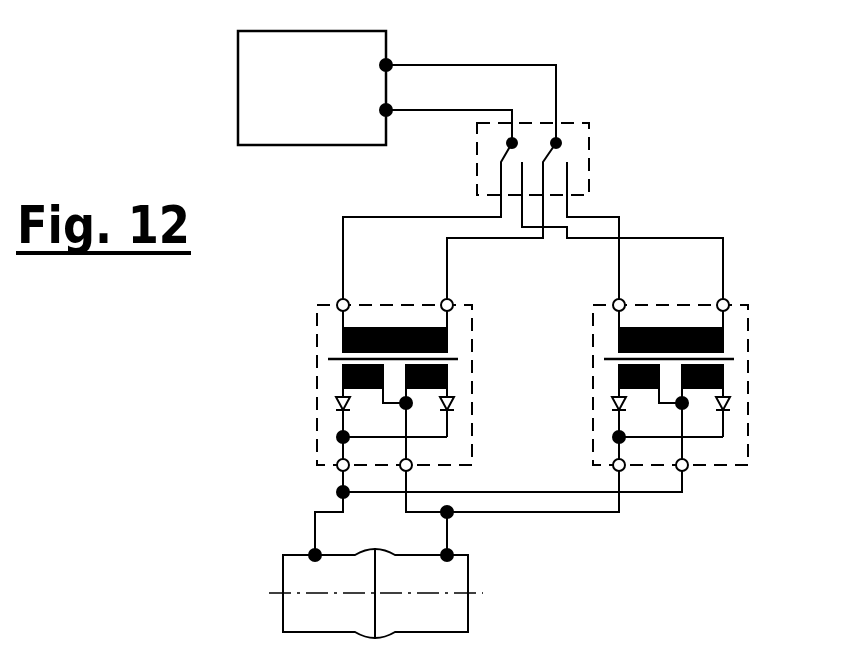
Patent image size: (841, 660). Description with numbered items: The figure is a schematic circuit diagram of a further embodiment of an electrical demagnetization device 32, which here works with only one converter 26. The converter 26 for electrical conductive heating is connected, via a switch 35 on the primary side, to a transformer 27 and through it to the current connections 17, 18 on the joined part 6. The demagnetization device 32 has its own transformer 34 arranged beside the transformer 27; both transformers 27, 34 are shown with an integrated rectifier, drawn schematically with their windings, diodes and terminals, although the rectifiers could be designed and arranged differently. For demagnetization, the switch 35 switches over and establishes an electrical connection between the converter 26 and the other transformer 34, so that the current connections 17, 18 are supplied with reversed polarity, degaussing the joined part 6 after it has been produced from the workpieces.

The joined part 6 is at (455, 617).
The current connection 17 is at (312, 552).
The current connection 18 is at (453, 553).
The converter 26 is at (280, 72).
The transformer 27 is at (317, 366).
The demagnetization device 32 is at (539, 368).
The transformer 34 is at (748, 460).
The switch 35 is at (588, 122).